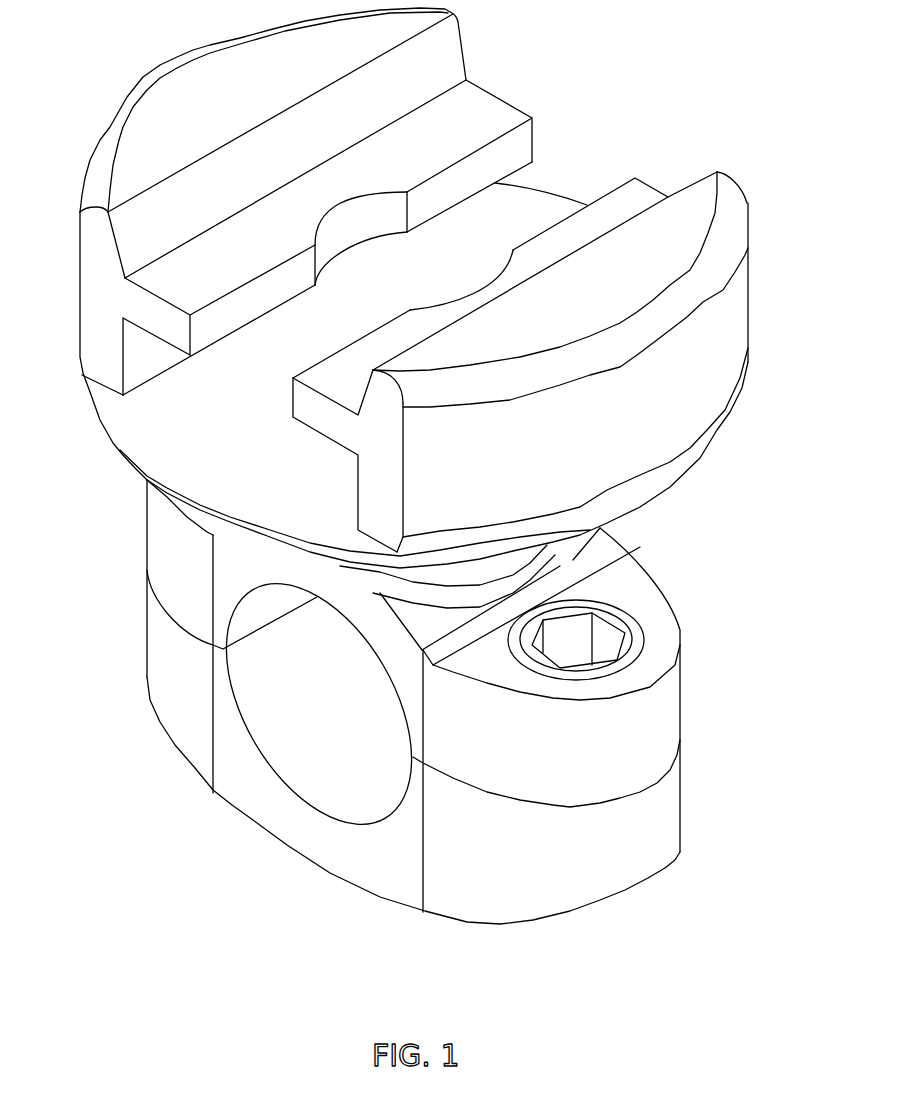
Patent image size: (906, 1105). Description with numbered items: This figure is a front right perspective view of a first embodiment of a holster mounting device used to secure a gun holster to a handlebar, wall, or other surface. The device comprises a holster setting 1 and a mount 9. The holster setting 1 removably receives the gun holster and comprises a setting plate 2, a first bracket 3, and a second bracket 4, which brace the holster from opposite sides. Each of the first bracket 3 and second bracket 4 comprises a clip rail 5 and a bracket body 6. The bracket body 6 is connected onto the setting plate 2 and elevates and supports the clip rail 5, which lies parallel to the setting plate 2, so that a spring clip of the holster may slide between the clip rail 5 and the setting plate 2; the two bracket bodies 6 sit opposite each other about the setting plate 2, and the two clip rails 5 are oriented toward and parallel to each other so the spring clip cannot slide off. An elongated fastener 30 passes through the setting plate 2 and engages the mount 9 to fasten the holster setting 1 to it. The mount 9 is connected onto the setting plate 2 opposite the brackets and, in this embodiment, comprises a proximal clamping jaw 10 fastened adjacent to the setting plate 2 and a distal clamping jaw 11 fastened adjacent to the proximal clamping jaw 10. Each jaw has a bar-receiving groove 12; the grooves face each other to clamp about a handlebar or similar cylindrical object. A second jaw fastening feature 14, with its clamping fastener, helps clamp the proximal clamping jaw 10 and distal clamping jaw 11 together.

The holster setting 1 is at (772, 186).
The setting plate 2 is at (122, 448).
The first bracket 3 is at (106, 158).
The second bracket 4 is at (736, 325).
The clip rail 5 is at (532, 140).
The bracket body 6 is at (84, 288).
The mount 9 is at (729, 623).
The proximal clamping jaw 10 is at (674, 714).
The distal clamping jaw 11 is at (670, 827).
The bar-receiving groove 12 is at (266, 622).
The second jaw fastening feature 14 is at (598, 610).
The elongated fastener 30 is at (328, 346).